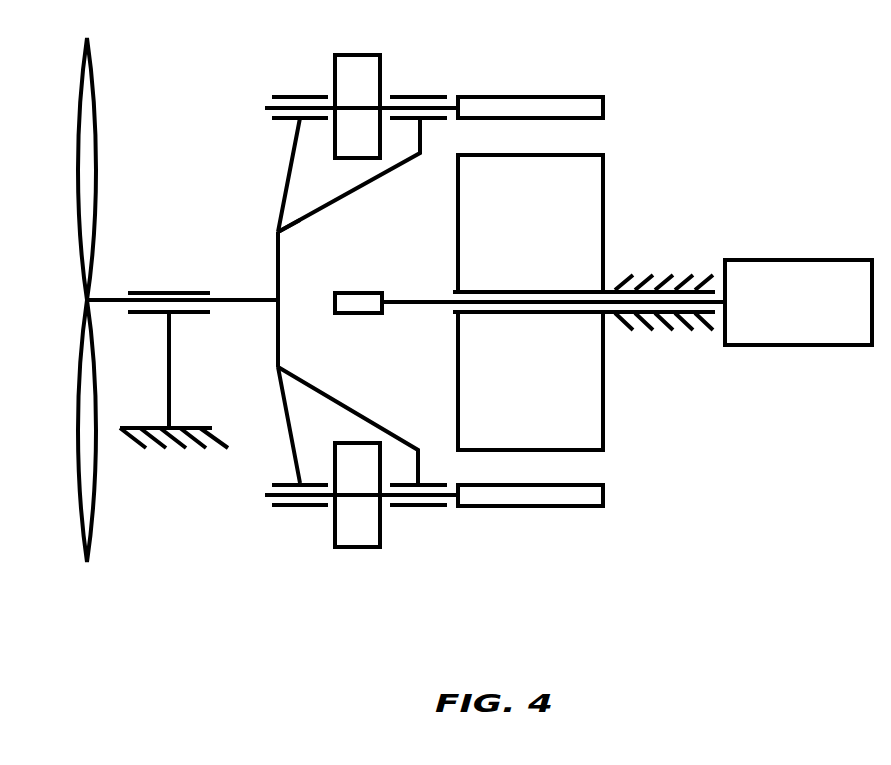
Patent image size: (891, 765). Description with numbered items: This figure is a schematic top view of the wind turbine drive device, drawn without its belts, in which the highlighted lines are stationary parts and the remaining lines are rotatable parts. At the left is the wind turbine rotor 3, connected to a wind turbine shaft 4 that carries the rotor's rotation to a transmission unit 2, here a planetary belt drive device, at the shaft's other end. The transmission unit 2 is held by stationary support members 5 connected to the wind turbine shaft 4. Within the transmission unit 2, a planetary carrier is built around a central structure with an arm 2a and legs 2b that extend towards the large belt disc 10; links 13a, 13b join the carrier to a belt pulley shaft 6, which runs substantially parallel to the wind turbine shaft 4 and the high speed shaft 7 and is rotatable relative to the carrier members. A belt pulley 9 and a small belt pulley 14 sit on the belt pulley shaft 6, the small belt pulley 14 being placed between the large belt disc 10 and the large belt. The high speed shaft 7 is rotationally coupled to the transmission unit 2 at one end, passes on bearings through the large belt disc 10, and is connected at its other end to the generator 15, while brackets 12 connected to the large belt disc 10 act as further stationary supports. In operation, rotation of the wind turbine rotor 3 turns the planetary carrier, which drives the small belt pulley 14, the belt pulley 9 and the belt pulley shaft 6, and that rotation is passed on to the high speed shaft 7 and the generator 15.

The transmission unit 2 is at (262, 194).
The first arm of transmission member 2a is at (276, 297).
The legs 2b is at (283, 235).
The wind turbine rotor 3 is at (82, 137).
The wind turbine shaft 4 is at (218, 292).
The support members 5 is at (170, 367).
The belt pulley shaft 6 is at (268, 106).
The high speed shaft 7 is at (420, 300).
The belt pulley 9 is at (354, 62).
The large belt disc 10 is at (605, 184).
The brackets 12 is at (668, 330).
The first link 13a is at (292, 148).
The second link 13b is at (383, 175).
The small belt pulley 14 is at (527, 97).
The generator 15 is at (830, 260).